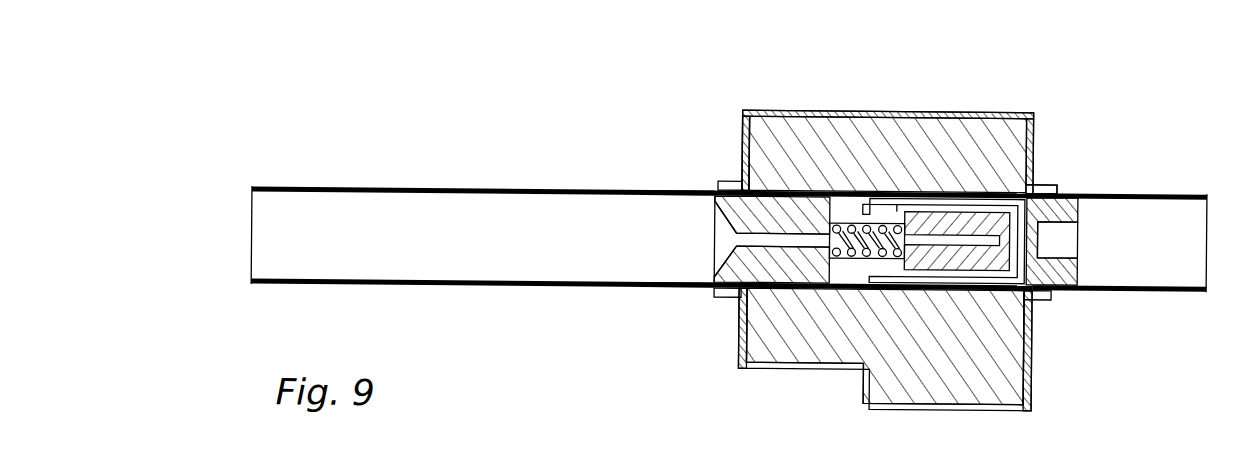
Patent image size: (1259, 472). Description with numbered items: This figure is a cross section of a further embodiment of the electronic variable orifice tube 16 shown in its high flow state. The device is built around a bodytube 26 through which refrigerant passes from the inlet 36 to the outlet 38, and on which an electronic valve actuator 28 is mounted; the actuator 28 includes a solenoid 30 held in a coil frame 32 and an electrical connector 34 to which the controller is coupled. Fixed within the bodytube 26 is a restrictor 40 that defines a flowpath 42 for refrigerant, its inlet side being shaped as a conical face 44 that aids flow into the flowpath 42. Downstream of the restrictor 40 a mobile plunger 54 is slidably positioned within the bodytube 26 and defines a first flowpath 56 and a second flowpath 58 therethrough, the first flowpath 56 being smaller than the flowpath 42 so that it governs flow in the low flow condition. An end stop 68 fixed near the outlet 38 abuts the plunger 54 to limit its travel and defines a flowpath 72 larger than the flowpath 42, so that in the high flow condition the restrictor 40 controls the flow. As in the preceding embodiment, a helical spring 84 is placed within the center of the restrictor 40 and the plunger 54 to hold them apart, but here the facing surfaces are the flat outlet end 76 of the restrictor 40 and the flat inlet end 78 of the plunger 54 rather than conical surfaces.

The electronic variable orifice tube 16 is at (1128, 68).
The bodytube 26 is at (322, 185).
The electronic valve actuator 28 is at (950, 105).
The solenoid 30 is at (805, 123).
The coil frame 32 is at (742, 126).
The electrical connector 34 is at (1001, 404).
The inlet 36 is at (226, 244).
The outlet 38 is at (1222, 205).
The restrictor 40 is at (737, 253).
The flowpath 42 is at (740, 194).
The conical face 44 is at (631, 197).
The mobile plunger 54 is at (977, 258).
The first flowpath 56 is at (1032, 188).
The second flowpath 58 is at (985, 186).
The end stop 68 is at (1075, 187).
The flowpath 72 is at (1067, 231).
The outlet end 76 is at (869, 193).
The inlet end 78 is at (897, 194).
The helical spring 84 is at (852, 247).